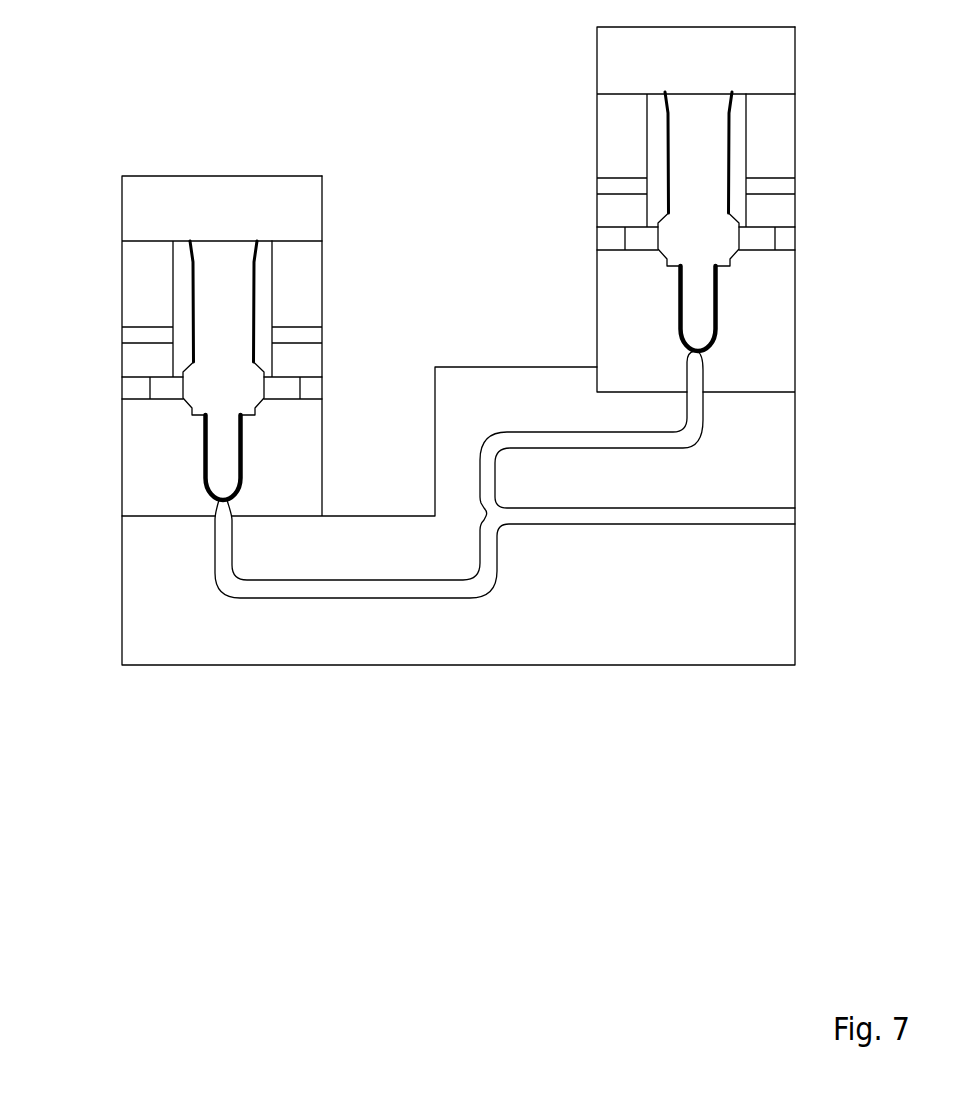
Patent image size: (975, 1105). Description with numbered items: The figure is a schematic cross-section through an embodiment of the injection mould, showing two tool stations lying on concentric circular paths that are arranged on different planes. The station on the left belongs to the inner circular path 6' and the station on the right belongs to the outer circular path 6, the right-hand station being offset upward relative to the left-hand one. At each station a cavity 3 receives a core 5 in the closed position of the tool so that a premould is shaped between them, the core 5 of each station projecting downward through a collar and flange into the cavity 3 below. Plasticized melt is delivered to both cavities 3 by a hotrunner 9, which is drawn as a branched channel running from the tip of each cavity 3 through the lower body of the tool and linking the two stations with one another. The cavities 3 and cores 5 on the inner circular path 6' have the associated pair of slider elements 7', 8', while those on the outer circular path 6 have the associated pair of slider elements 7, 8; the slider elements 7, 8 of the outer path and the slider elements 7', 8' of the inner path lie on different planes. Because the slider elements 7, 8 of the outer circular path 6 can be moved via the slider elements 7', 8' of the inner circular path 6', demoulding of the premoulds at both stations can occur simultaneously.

The cavity 3 is at (688, 297).
The core 5 is at (215, 390).
The outer circular path 6 is at (501, 446).
The inner circular path 6' is at (359, 427).
The slider element 7 is at (643, 151).
The slider element 7' is at (183, 313).
The slider element 8 is at (809, 138).
The slider element 8' is at (345, 287).
The hotrunner 9 is at (542, 522).